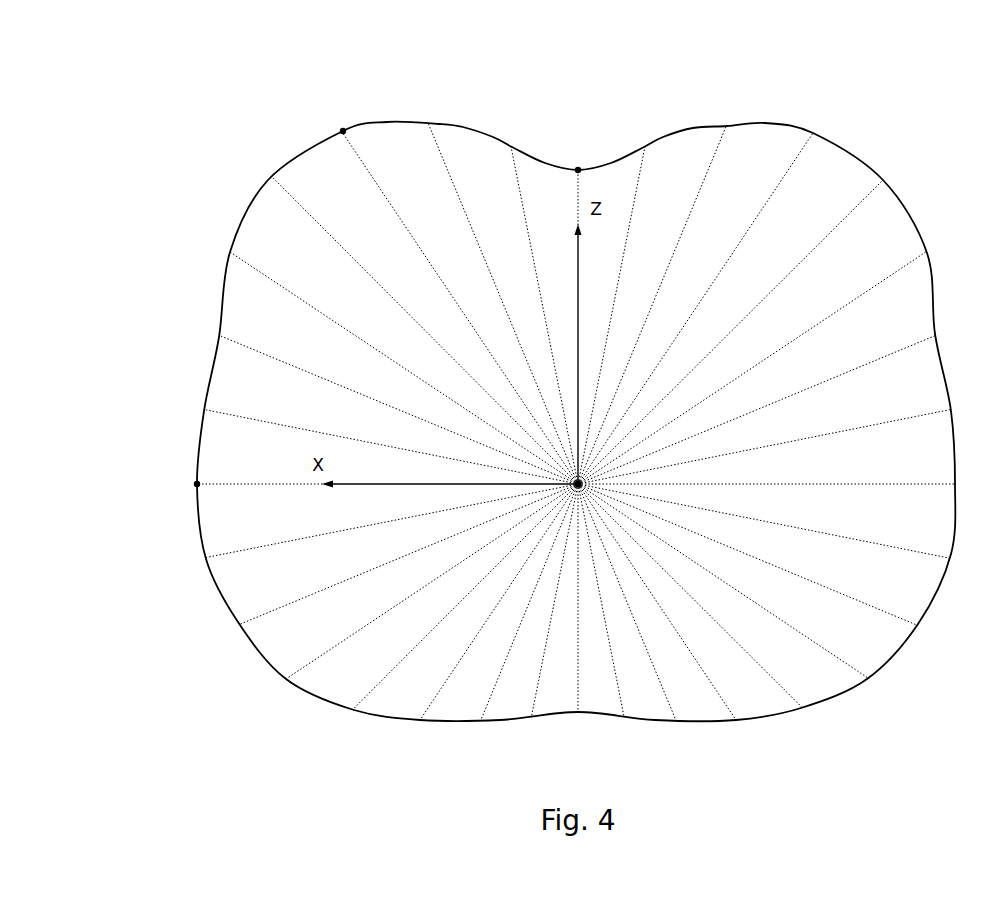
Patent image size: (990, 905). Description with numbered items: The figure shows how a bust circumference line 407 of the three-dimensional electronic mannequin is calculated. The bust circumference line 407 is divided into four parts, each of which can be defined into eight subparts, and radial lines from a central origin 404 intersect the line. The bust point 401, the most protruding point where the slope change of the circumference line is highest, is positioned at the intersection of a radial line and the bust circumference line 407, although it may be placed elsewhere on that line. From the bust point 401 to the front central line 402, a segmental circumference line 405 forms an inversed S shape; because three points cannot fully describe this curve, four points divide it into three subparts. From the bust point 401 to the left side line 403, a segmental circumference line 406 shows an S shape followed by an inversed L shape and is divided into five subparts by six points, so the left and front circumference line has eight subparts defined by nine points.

The bust point 401 is at (343, 131).
The front central line 402 is at (578, 170).
The left side line 403 is at (197, 484).
The origin / center point of the coordinate system 404 is at (580, 488).
The segmental circumference line 405 is at (463, 127).
The segmental circumference line 406 is at (222, 290).
The bust circumference line 407 is at (295, 162).